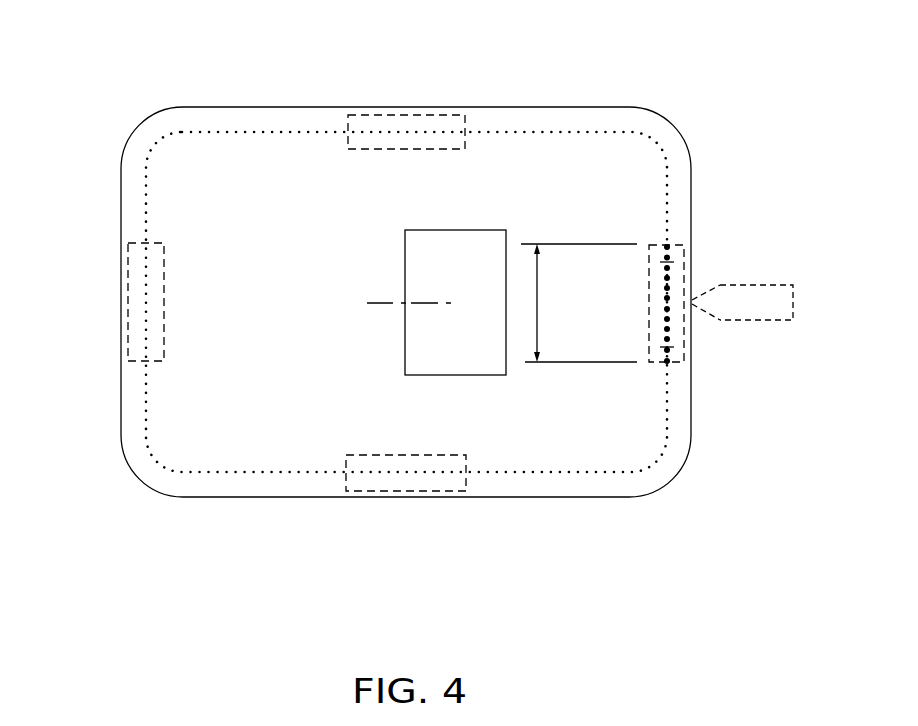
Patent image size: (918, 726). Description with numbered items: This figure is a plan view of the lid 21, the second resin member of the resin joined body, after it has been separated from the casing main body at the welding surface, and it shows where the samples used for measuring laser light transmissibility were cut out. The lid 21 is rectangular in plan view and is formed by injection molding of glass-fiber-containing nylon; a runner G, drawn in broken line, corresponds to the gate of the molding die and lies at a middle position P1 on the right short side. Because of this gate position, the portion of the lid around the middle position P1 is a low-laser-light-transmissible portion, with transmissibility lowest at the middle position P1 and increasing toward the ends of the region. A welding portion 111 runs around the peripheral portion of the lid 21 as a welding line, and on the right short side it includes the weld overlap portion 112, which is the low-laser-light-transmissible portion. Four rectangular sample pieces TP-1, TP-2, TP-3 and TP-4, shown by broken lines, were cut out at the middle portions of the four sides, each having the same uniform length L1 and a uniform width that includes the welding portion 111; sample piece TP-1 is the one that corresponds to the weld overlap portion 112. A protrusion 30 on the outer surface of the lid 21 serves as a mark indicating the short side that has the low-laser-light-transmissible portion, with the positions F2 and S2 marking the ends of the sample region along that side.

The lid (second resin member) 21 is at (174, 88).
The welding portion 111 is at (302, 132).
The weld overlap portion 112 is at (667, 327).
The protrusion 30 is at (450, 375).
The sample piece TP-1 is at (672, 362).
The sample piece TP-2 is at (138, 243).
The sample piece TP-3 is at (465, 127).
The sample piece TP-4 is at (466, 484).
The specific region (uniform length of sample pieces) L1 is at (579, 303).
The first dot position F2 is at (667, 262).
The second dot position S2 is at (667, 347).
The middle position P1 is at (694, 301).
The runner G is at (790, 285).